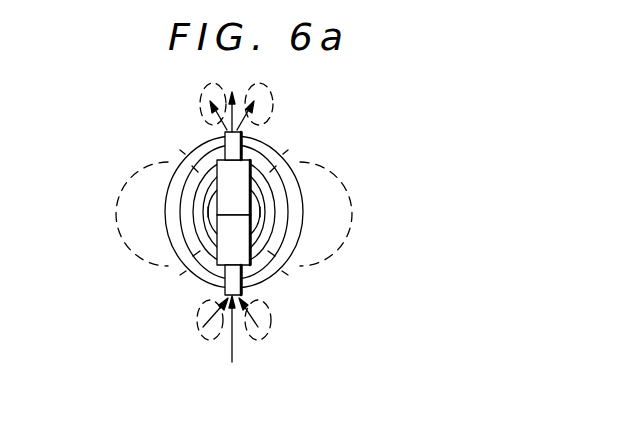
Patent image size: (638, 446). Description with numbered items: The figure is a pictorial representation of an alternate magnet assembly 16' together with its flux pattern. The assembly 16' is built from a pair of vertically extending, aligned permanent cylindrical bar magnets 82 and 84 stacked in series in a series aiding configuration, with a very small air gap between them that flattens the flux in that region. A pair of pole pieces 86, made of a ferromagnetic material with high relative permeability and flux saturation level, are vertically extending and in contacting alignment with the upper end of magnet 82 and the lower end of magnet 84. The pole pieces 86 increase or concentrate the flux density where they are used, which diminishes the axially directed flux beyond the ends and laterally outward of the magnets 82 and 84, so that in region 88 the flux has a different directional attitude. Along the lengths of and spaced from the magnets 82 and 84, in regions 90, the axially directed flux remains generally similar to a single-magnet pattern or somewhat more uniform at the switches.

The magnet assembly 16' is at (165, 218).
The permanent cylindrical bar type magnet 82 is at (249, 193).
The permanent cylindrical bar type magnet 84 is at (252, 240).
The pole piece 86 is at (244, 150).
The region 88 is at (204, 103).
The region 90 is at (138, 220).